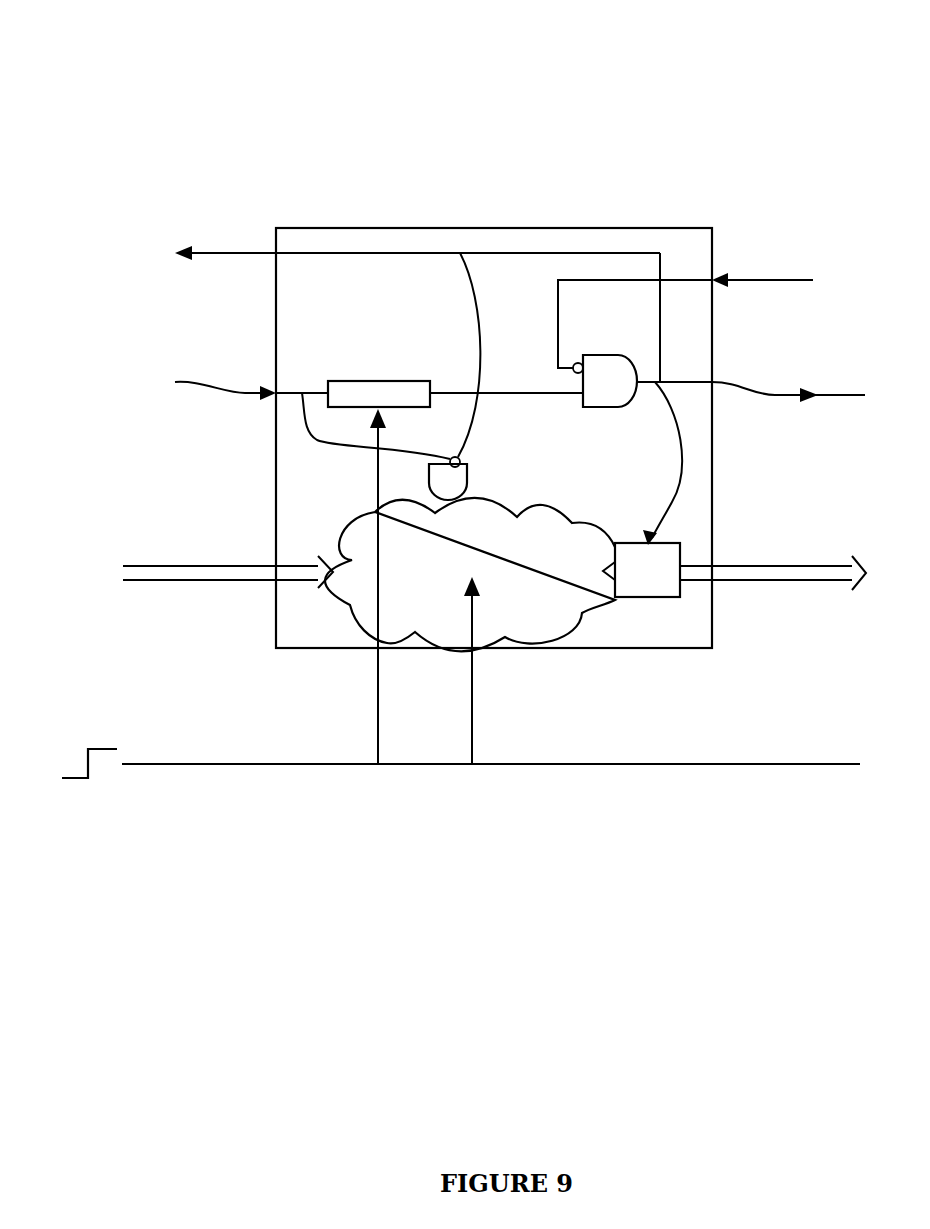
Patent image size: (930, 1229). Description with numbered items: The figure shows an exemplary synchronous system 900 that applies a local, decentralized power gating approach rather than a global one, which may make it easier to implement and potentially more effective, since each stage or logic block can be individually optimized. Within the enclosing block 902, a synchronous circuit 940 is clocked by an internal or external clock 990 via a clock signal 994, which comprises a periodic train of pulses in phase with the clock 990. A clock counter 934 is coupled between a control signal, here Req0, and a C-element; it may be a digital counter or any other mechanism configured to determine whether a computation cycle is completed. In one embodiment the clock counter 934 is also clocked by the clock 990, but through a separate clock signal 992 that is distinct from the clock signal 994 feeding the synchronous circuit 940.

The synchronous system 900 is at (686, 72).
The interface wrapper block 902 is at (527, 226).
The clock counter 934 is at (365, 335).
The synchronous circuit 940 is at (537, 505).
The clock 990 is at (102, 722).
The clock signal 992 is at (375, 722).
The clock signal 994 is at (477, 730).